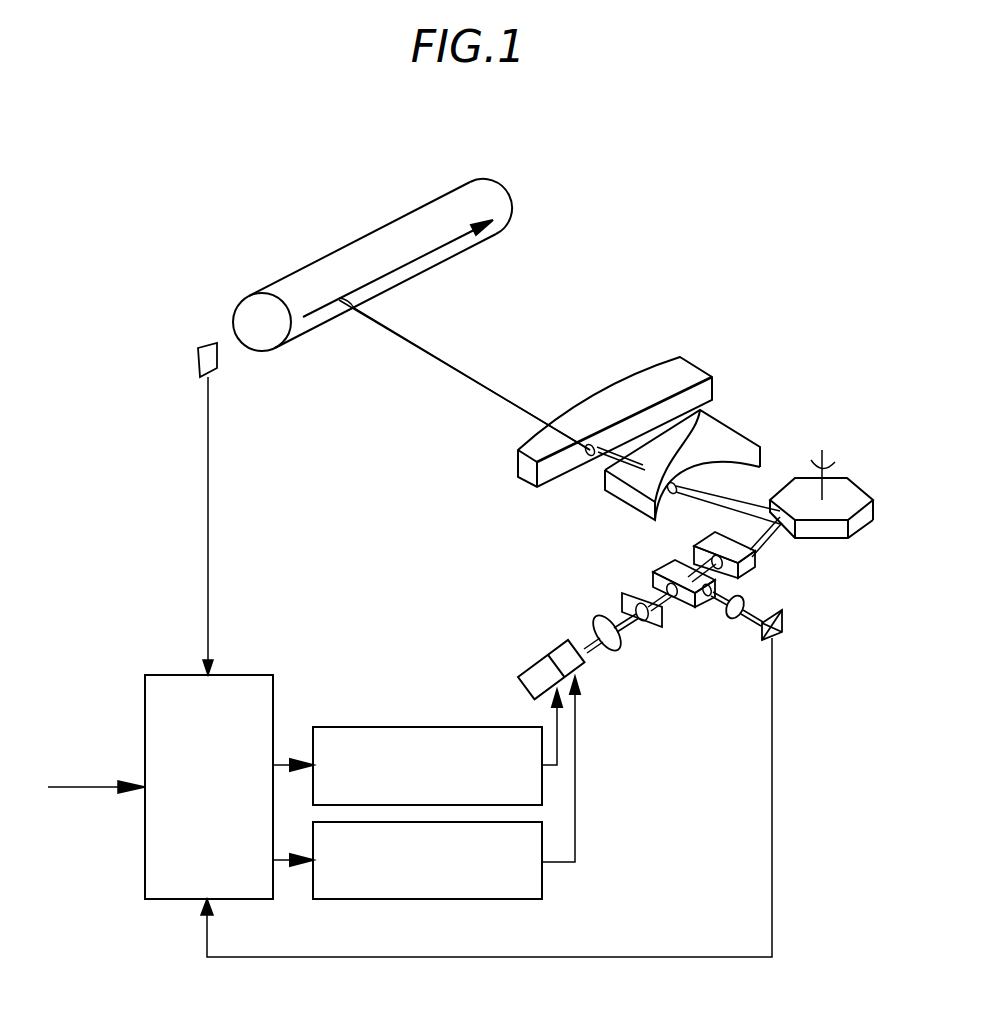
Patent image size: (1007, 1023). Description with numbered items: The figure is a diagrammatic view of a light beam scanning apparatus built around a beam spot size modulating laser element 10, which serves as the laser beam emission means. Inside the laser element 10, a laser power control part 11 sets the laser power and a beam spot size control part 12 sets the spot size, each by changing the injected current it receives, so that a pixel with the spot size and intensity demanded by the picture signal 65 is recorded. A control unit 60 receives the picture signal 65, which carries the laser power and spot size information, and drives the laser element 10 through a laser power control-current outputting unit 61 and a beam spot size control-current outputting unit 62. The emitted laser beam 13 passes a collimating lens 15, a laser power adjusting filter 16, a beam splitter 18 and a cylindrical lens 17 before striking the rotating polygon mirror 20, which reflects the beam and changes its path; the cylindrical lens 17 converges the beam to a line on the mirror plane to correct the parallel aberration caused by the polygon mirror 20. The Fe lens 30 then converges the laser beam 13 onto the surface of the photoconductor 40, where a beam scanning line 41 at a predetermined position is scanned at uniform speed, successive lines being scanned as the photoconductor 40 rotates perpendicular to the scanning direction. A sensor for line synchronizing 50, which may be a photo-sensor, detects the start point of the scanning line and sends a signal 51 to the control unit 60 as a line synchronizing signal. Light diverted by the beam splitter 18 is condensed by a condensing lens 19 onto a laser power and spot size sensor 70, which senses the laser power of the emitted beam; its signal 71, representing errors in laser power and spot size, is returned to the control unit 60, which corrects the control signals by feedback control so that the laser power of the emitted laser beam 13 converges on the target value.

The beam spot size modulating laser element 10 is at (502, 605).
The laser power control part 11 is at (535, 670).
The beam spot size control part 12 is at (553, 649).
The laser beam 13 is at (453, 363).
The collimating lens 15 is at (590, 620).
The laser power adjusting filter 16 is at (622, 602).
The cylindrical lens 17 is at (758, 562).
The beam splitter 18 is at (653, 572).
The condensing lens 19 is at (732, 617).
The polygon mirror 20 is at (860, 483).
The Fe lens 30 is at (712, 377).
The photoconductor 40 is at (511, 205).
The beam scanning line 41 is at (420, 259).
The sensor for line synchronizing 50 is at (198, 355).
The signal indicating the start point 51 is at (212, 512).
The control unit 60 is at (275, 703).
The laser power control-current outputting unit 61 is at (512, 727).
The beam spot size control-current outputting unit 62 is at (513, 900).
The picture signal 65 is at (90, 786).
The laser power and spot size sensor 70 is at (783, 628).
The signal representing the errors 71 is at (448, 958).